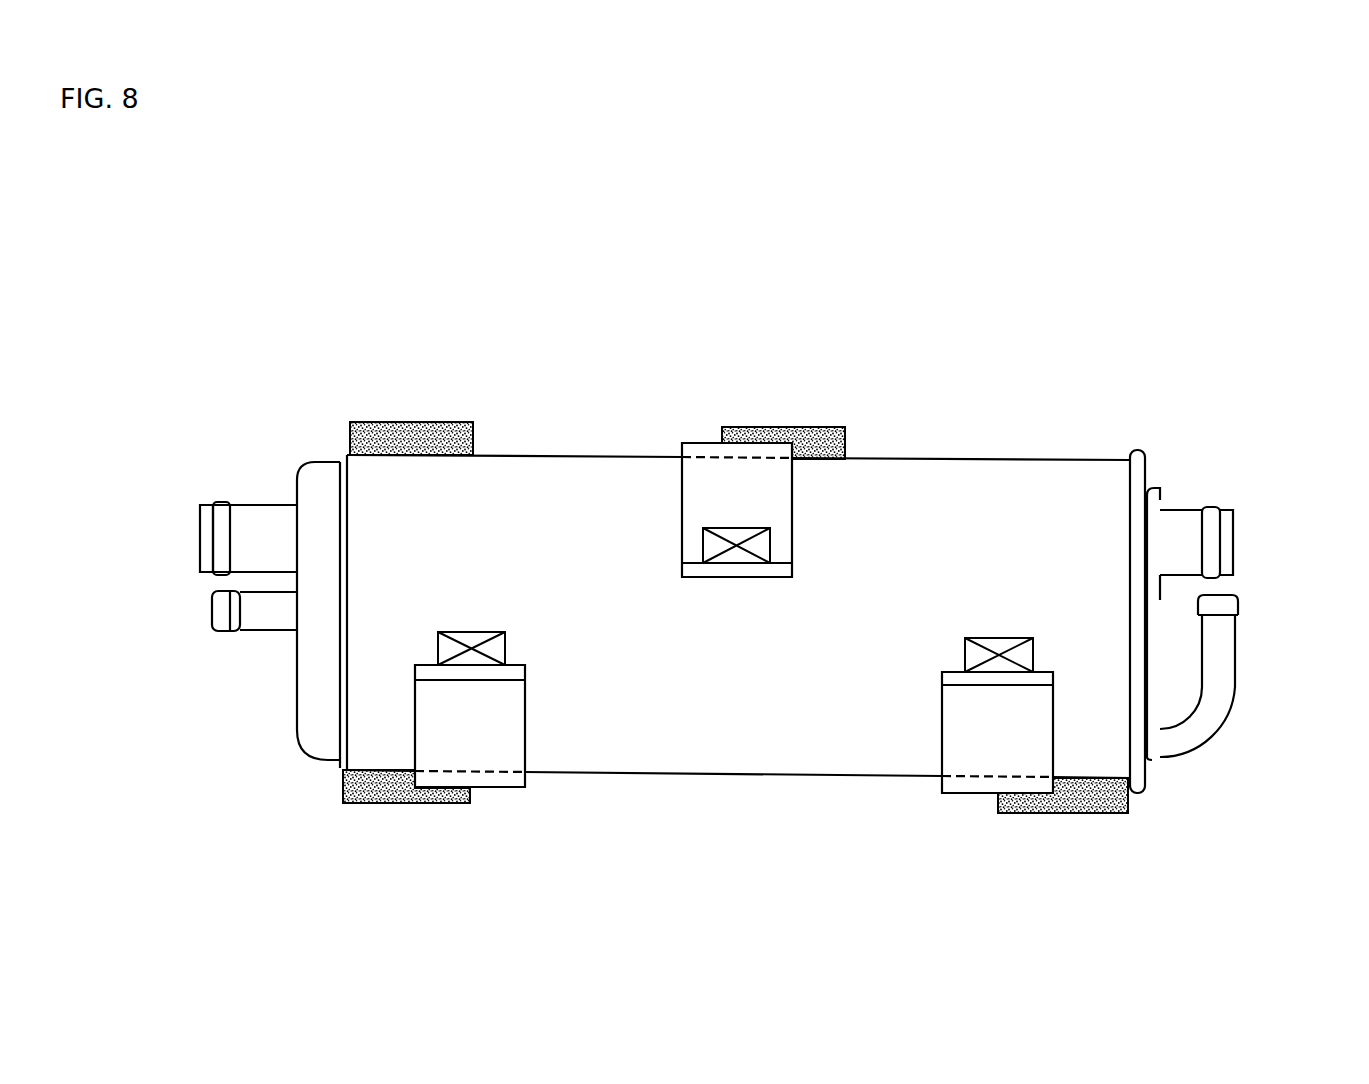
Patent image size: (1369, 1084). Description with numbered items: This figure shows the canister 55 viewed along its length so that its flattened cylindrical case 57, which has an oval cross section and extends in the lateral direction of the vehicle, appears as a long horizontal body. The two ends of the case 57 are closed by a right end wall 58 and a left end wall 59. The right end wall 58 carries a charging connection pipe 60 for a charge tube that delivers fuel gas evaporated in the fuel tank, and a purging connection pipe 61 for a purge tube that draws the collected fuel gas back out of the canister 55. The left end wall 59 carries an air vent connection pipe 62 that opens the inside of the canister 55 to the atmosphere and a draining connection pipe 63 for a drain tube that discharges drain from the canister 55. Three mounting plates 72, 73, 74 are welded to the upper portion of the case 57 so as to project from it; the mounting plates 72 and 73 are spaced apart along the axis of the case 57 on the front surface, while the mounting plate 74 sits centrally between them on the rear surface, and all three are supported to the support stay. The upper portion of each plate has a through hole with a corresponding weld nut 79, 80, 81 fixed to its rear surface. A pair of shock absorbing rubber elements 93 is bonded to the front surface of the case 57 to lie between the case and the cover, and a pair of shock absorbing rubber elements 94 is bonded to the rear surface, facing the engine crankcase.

The canister 55 is at (941, 452).
The case 57 is at (737, 750).
The right end wall 58 is at (307, 727).
The left end wall 59 is at (1160, 493).
The charging connection pipe 60 is at (262, 623).
The purging connection pipe 61 is at (263, 528).
The air vent connection pipe 62 is at (1212, 537).
The draining connection pipe 63 is at (1227, 660).
The mounting plate 72 is at (945, 677).
The mounting plate 73 is at (525, 672).
The mounting plate 74 is at (780, 570).
The weld nut 79 is at (1001, 640).
The weld nut 80 is at (468, 633).
The weld nut 81 is at (728, 535).
The shock absorbing rubber elements 93 is at (390, 798).
The shock absorbing rubber elements 94 is at (433, 427).